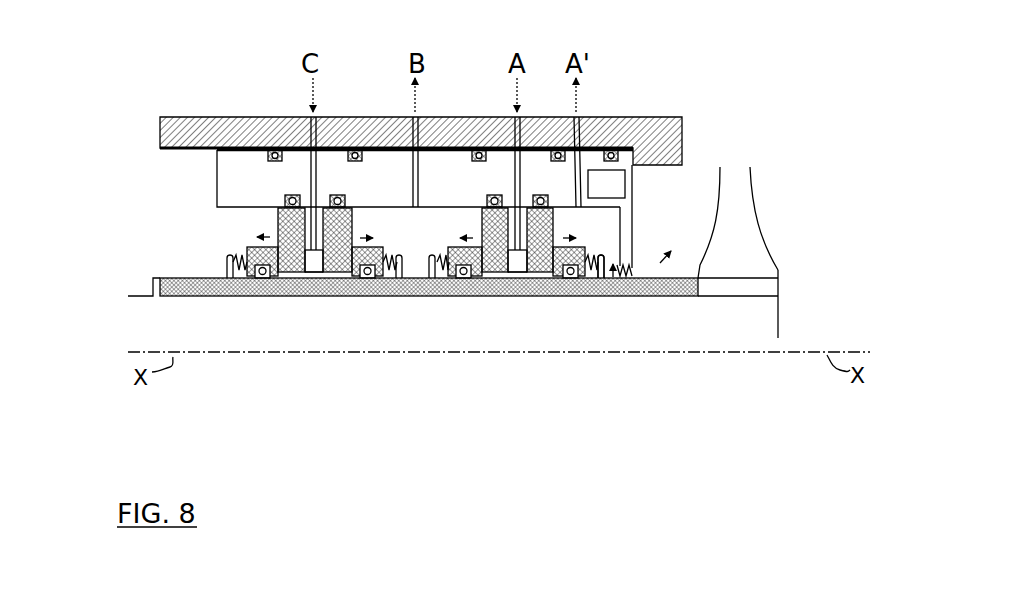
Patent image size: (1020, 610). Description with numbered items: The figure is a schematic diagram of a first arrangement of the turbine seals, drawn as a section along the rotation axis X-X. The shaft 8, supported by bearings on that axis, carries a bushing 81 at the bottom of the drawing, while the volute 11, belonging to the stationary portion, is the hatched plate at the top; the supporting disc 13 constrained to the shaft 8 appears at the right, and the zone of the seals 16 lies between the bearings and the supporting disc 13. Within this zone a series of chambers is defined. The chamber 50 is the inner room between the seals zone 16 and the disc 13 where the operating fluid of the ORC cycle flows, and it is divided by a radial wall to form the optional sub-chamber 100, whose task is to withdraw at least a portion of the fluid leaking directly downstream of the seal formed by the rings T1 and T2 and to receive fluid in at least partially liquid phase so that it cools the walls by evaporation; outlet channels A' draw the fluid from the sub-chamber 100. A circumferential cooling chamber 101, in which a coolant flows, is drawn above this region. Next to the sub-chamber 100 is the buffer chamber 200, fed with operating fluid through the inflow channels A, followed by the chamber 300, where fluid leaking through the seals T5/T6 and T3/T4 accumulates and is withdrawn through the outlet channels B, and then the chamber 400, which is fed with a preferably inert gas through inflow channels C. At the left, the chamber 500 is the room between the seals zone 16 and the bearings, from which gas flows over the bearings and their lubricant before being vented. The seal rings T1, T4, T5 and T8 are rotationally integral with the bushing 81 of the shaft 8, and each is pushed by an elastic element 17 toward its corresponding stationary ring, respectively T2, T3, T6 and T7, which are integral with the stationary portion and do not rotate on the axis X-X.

The shaft 8 is at (762, 320).
The volute 11 is at (193, 132).
The supporting disc 13 is at (762, 280).
The seals zone 16 is at (198, 92).
The elastic element 17 is at (588, 266).
The chamber 50 is at (761, 184).
The bushing 81 is at (195, 283).
The sub-chamber 100 is at (617, 296).
The circumferential cooling chamber 101 is at (617, 183).
The buffer chamber 200 is at (517, 272).
The chamber 300 is at (447, 299).
The chamber 400 is at (318, 272).
The chamber 500 is at (200, 243).
The seal ring T1 is at (580, 272).
The seal ring T2 is at (547, 272).
The seal ring T3 is at (497, 272).
The seal ring T4 is at (457, 278).
The seal ring T5 is at (373, 278).
The seal ring T6 is at (348, 272).
The seal ring T7 is at (292, 278).
The seal ring T8 is at (252, 278).